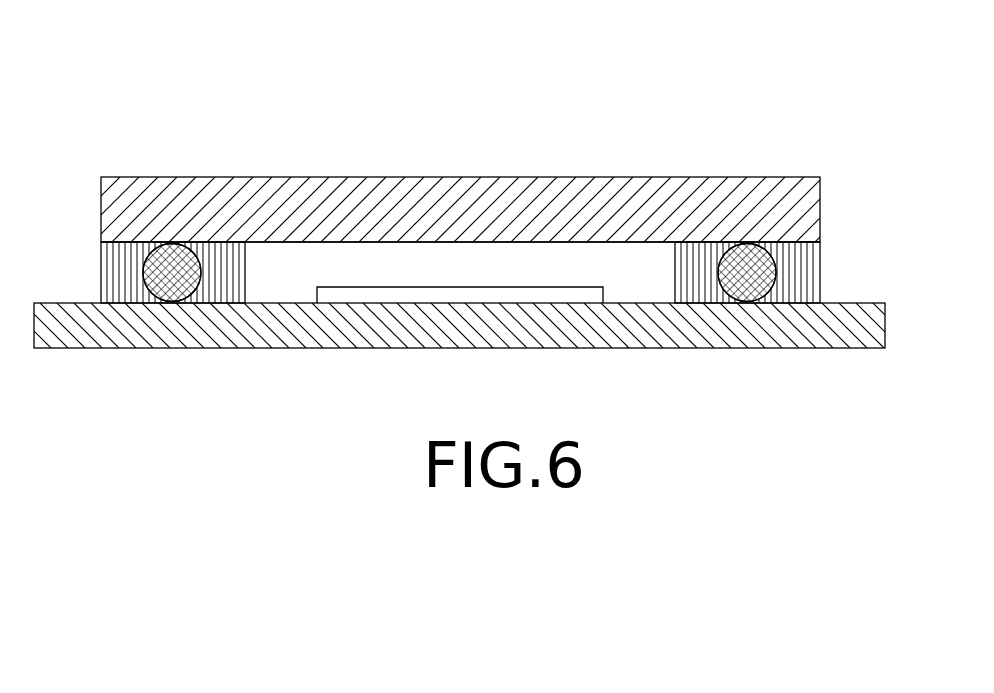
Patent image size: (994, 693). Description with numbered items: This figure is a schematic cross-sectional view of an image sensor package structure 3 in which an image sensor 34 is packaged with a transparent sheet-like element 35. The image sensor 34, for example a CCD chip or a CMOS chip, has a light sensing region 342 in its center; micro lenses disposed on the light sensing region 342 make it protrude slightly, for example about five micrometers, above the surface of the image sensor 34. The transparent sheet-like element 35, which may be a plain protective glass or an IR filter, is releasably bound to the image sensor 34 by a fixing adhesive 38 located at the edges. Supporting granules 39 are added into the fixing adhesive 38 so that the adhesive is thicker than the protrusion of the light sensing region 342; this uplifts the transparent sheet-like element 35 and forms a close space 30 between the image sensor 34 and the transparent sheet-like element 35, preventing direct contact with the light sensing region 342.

The image sensor package structure 3 is at (673, 43).
The close space 30 is at (402, 263).
The image sensor 34 is at (713, 330).
The light sensing region 342 is at (392, 295).
The transparent sheet-like element 35 is at (682, 197).
The fixing adhesive 38 is at (790, 290).
The supporting granules 39 is at (758, 237).